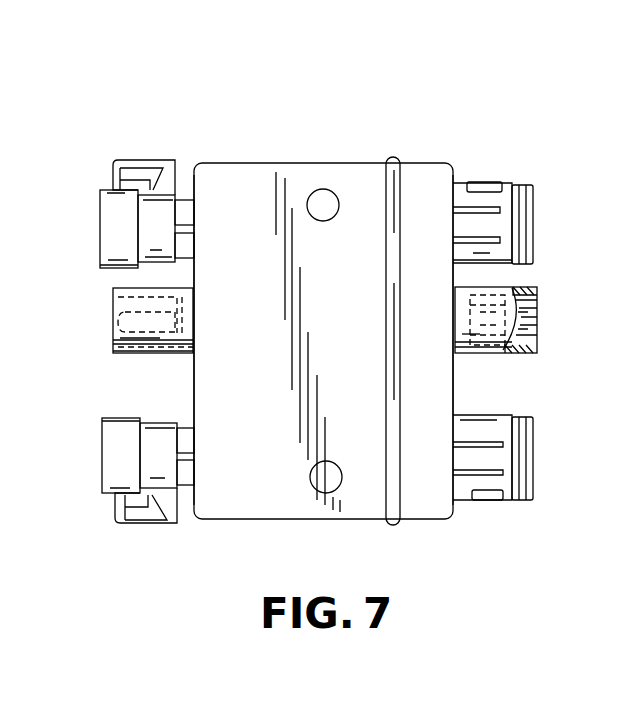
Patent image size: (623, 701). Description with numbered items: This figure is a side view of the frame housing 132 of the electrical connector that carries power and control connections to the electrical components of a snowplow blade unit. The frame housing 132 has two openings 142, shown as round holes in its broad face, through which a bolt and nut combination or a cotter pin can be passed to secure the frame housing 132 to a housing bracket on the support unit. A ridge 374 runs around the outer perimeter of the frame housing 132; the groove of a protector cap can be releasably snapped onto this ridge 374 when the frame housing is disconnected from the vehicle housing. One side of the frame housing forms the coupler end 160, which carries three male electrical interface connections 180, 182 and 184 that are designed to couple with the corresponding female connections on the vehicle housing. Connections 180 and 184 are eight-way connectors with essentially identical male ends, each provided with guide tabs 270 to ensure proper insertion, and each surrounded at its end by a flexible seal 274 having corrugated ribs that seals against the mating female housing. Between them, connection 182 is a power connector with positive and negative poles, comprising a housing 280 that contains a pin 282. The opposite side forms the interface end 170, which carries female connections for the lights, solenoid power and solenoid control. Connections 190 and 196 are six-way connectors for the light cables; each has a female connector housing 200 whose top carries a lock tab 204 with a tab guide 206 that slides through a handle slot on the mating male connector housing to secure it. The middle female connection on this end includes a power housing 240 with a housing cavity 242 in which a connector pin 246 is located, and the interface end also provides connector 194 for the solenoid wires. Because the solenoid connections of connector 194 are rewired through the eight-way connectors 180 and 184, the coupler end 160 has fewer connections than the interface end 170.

The frame housing 132 is at (252, 160).
The openings 142 is at (322, 190).
The coupler end 160 is at (453, 172).
The interface end 170 is at (192, 178).
The electrical interface connection 180 is at (508, 182).
The electrical interface connection 182 is at (528, 285).
The electrical interface connection 184 is at (527, 500).
The electrical interface connection 190 is at (100, 188).
The electrical interface connector 194 is at (113, 290).
The electrical interface connection 196 is at (105, 496).
The female connector housing 200 is at (112, 213).
The lock tab 204 is at (128, 170).
The tab guide 206 is at (113, 160).
The power housing 240 is at (132, 355).
The housing cavity 242 is at (115, 340).
The connector pin 246 is at (118, 323).
The guide tabs 270 is at (483, 185).
The flexible seal 274 is at (528, 205).
The housing 280 is at (527, 353).
The pin 282 is at (530, 313).
The ridge 374 is at (393, 157).